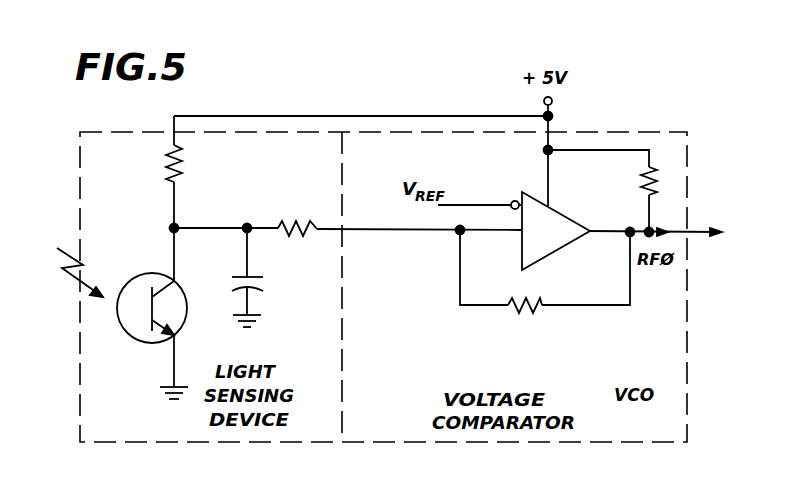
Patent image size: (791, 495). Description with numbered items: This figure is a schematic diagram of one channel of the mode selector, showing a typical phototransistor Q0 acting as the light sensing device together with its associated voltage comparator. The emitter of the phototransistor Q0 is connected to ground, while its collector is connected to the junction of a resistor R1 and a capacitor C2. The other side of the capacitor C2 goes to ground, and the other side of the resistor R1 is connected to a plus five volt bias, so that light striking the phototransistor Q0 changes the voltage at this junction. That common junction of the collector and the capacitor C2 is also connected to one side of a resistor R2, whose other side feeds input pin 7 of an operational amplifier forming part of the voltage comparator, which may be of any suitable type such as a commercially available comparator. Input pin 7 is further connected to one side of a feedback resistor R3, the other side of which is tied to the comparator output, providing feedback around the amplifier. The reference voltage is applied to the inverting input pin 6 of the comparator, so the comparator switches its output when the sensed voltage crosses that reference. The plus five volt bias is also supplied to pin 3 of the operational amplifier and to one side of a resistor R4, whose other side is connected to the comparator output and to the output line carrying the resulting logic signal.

The resistor R1 is at (189, 186).
The resistor R2 is at (297, 211).
The feedback resistor R3 is at (545, 286).
The resistor R4 is at (602, 191).
The capacitor C2 is at (266, 277).
The phototransistor Q0 is at (134, 313).
The inverting input pin 6 is at (513, 186).
The input pin 7 is at (509, 245).
The pin 3 is at (565, 203).